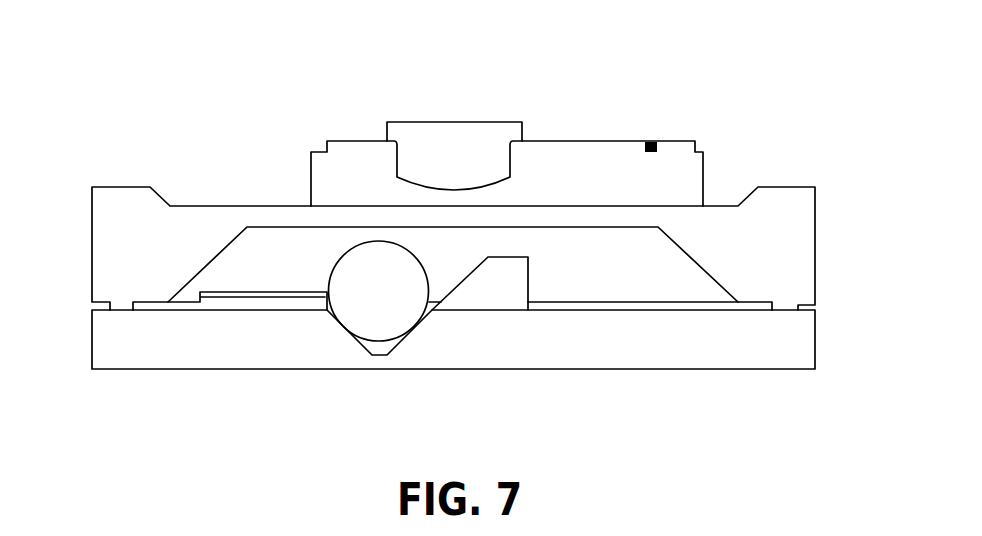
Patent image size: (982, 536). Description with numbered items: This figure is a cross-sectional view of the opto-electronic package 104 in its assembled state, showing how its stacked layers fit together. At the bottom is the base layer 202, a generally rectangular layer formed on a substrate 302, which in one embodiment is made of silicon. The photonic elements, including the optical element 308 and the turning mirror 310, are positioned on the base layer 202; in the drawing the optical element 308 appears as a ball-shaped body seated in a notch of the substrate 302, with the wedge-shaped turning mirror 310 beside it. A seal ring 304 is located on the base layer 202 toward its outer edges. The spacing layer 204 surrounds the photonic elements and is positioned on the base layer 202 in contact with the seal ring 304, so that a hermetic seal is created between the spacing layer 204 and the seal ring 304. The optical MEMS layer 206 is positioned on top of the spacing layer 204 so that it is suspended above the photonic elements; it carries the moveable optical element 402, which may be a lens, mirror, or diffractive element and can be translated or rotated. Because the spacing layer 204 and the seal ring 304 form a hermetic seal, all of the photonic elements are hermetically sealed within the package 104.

The opto-electronic package 104 is at (602, 57).
The base layer 202 is at (421, 365).
The spacing layer 204 is at (82, 185).
The optical MEMS layer 206 is at (546, 136).
The substrate 302 is at (643, 358).
The seal ring 304 is at (783, 305).
The optical element 308 is at (403, 270).
The turning mirror 310 is at (518, 285).
The moveable optical element 402 is at (449, 150).